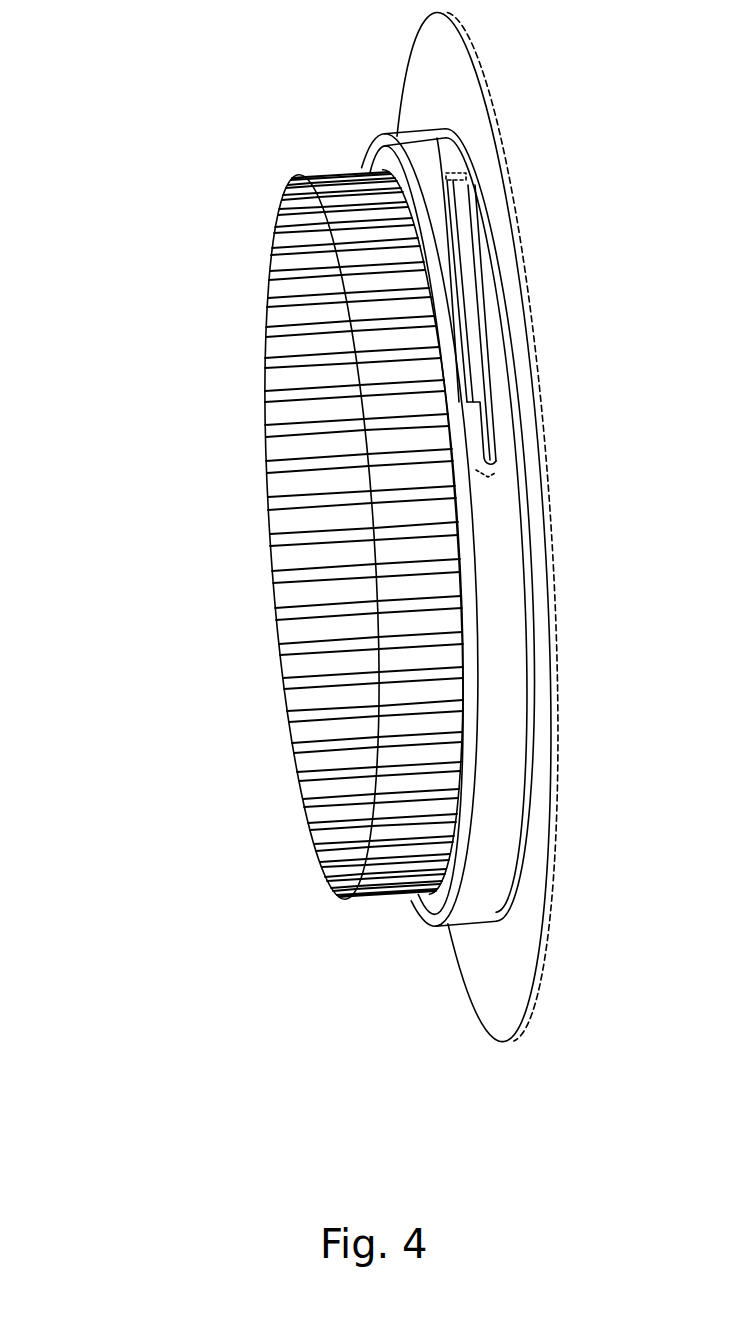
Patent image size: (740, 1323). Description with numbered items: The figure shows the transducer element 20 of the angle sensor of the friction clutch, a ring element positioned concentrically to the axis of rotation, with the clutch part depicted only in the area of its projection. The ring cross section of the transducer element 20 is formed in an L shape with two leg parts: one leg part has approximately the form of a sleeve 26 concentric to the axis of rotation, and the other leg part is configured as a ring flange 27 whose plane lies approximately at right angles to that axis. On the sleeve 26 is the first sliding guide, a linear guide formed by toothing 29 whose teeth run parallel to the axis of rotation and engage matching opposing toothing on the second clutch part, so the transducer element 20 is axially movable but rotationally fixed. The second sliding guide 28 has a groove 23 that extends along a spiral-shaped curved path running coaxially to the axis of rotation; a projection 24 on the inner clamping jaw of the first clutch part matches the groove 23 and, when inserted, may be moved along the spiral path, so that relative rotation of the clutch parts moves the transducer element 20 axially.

The transducer element 20 is at (115, 965).
The groove 23 is at (473, 307).
The projection 24 is at (472, 449).
The sleeve 26 is at (363, 912).
The ring flange 27 is at (541, 1023).
The second sliding guide 28 is at (498, 358).
The toothing 29 is at (278, 613).